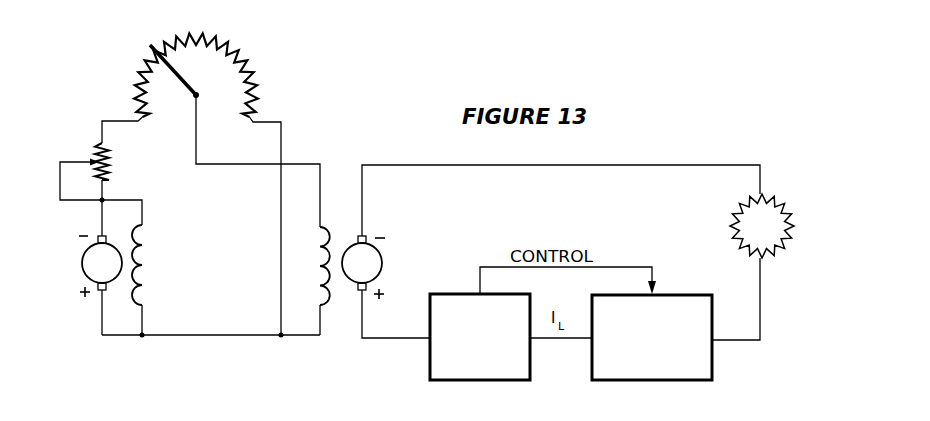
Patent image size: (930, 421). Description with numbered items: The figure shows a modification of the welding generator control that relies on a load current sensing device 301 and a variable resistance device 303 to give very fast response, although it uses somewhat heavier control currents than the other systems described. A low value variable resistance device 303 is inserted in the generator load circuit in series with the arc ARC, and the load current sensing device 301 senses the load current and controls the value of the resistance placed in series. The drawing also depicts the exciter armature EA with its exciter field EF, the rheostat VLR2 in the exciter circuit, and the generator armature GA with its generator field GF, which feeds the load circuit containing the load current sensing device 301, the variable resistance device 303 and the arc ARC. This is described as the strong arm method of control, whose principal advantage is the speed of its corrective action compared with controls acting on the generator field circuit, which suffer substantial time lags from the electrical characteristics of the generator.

The load current sensing device 301 is at (435, 355).
The variable resistance device 303 is at (708, 368).
The exciter armature EA is at (100, 266).
The exciter field EF is at (143, 268).
The generator armature GA is at (363, 267).
The generator field GF is at (320, 266).
The arc ARC is at (762, 226).
The voltage limiting rheostat VLR2 is at (113, 184).